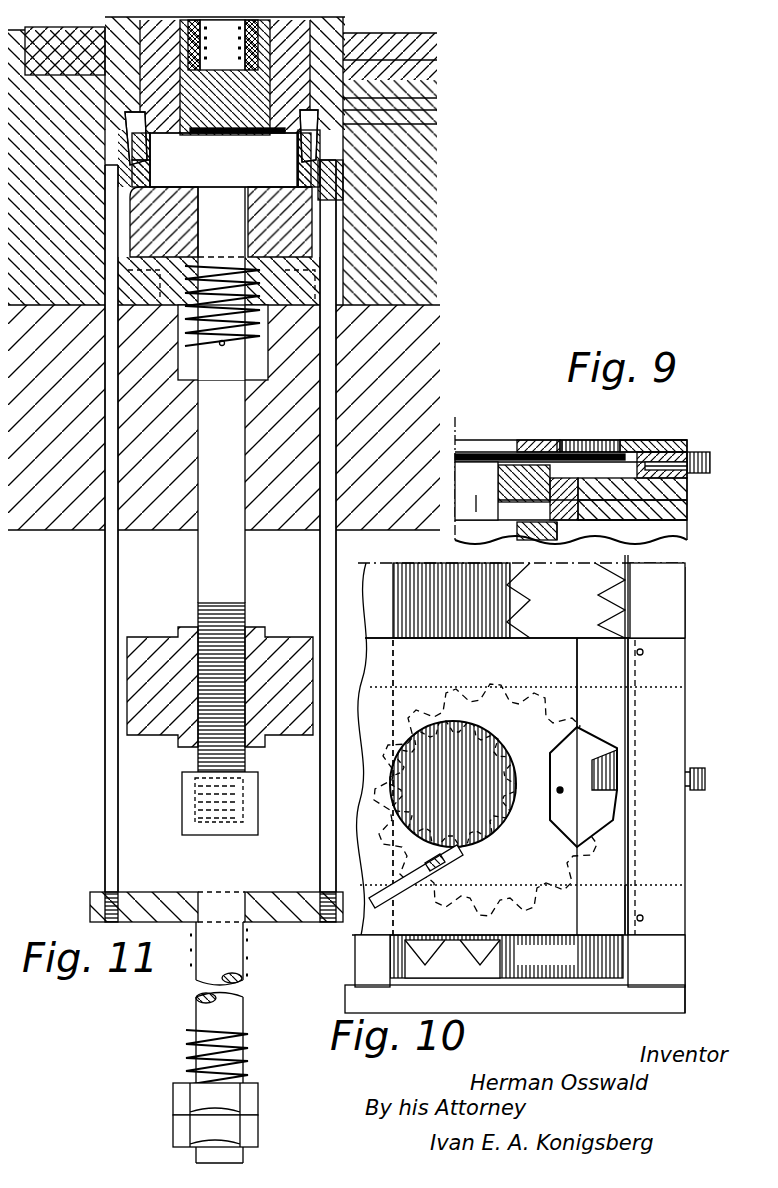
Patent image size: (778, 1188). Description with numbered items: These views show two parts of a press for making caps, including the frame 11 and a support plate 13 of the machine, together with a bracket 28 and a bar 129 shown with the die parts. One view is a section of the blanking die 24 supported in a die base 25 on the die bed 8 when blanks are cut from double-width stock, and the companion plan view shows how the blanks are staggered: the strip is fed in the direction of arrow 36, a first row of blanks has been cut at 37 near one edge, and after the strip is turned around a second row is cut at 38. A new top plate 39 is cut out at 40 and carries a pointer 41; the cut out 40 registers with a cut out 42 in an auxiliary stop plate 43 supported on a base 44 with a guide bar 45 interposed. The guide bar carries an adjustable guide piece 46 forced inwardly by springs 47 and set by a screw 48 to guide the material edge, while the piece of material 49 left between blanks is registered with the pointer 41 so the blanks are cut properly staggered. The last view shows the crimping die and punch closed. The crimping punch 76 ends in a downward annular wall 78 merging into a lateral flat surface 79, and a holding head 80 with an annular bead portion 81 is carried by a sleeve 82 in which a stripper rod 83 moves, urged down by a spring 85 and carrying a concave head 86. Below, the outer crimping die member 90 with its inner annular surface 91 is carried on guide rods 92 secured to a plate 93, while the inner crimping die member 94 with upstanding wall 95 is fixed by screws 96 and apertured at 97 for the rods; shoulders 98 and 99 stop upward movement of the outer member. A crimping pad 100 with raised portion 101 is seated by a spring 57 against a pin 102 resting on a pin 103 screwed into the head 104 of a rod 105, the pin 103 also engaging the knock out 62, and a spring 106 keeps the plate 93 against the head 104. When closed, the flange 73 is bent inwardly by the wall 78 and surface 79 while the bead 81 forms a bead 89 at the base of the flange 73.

In FIG. 10, the die bed 8 is at (515, 999).
In FIG. 10, the frame 11 is at (409, 787).
In FIG. 9, the support plate 13 is at (560, 531).
In FIG. 9, the blanking die 24 is at (510, 490).
In FIG. 9, the die base 25 is at (476, 491).
In FIG. 10, the bracket 28 is at (372, 961).
In FIG. 10, the arrow 36 is at (465, 602).
In FIG. 10, the cut blanks 37 is at (587, 815).
In FIG. 10, the second-row blank cut 38 is at (506, 849).
In FIG. 9, the top plate 39 is at (530, 445).
In FIG. 10, the top plate 39 is at (525, 657).
In FIG. 9, the cut out 40 is at (575, 447).
In FIG. 10, the cut out 40 is at (575, 745).
In FIG. 9, the pointer 41 is at (557, 445).
In FIG. 10, the pointer 41 is at (515, 862).
In FIG. 9, the cut out 42 is at (595, 447).
In FIG. 10, the cut out 42 is at (592, 748).
In FIG. 9, the auxiliary stop plate 43 is at (675, 440).
In FIG. 10, the auxiliary stop plate 43 is at (663, 860).
In FIG. 9, the base 44 is at (688, 508).
In FIG. 9, the guide bar 45 is at (688, 478).
In FIG. 10, the guide bar 45 is at (656, 775).
In FIG. 9, the adjustable guide piece 46 is at (650, 487).
In FIG. 10, the adjustable guide piece 46 is at (628, 899).
In FIG. 10, the springs 47 is at (700, 925).
In FIG. 9, the screw 48 is at (710, 462).
In FIG. 10, the screw 48 is at (712, 778).
In FIG. 10, the piece of material 49 is at (562, 789).
In FIG. 11, the spring 57 is at (236, 330).
In FIG. 11, the knock out 62 is at (160, 694).
In FIG. 11, the upstanding flange 73 is at (437, 124).
In FIG. 11, the crimping punch 76 is at (437, 33).
In FIG. 11, the annular wall 78 is at (437, 110).
In FIG. 11, the lateral annular flat surface 79 is at (437, 98).
In FIG. 11, the holding head 80 is at (320, 80).
In FIG. 11, the annular bead portion 81 is at (343, 88).
In FIG. 11, the sleeve 82 is at (437, 60).
In FIG. 11, the stripper rod 83 is at (343, 47).
In FIG. 11, the spring 85 is at (180, 48).
In FIG. 11, the concave head 86 is at (225, 77).
In FIG. 11, the bead 89 is at (150, 125).
In FIG. 11, the outer crimping die member 90 is at (335, 165).
In FIG. 11, the inner annular surface 91 is at (332, 160).
In FIG. 11, the guide rods 92 is at (325, 550).
In FIG. 11, the plate 93 is at (148, 907).
In FIG. 11, the inner crimping die member 94 is at (340, 200).
In FIG. 11, the upstanding wall 95 is at (150, 150).
In FIG. 11, the screws 96 is at (272, 228).
In FIG. 11, the apertures 97 is at (147, 213).
In FIG. 11, the shoulder 98 is at (305, 158).
In FIG. 11, the shoulder 99 is at (150, 172).
In FIG. 11, the crimping pad 100 is at (224, 160).
In FIG. 11, the convex raised portion 101 is at (236, 130).
In FIG. 11, the pin 102 is at (221, 395).
In FIG. 11, the pin 103 is at (228, 648).
In FIG. 11, the head 104 is at (262, 800).
In FIG. 11, the rod 105 is at (225, 1010).
In FIG. 11, the spring 106 is at (186, 1040).
In FIG. 9, the bar 129 is at (477, 460).
In FIG. 10, the bar 129 is at (545, 956).